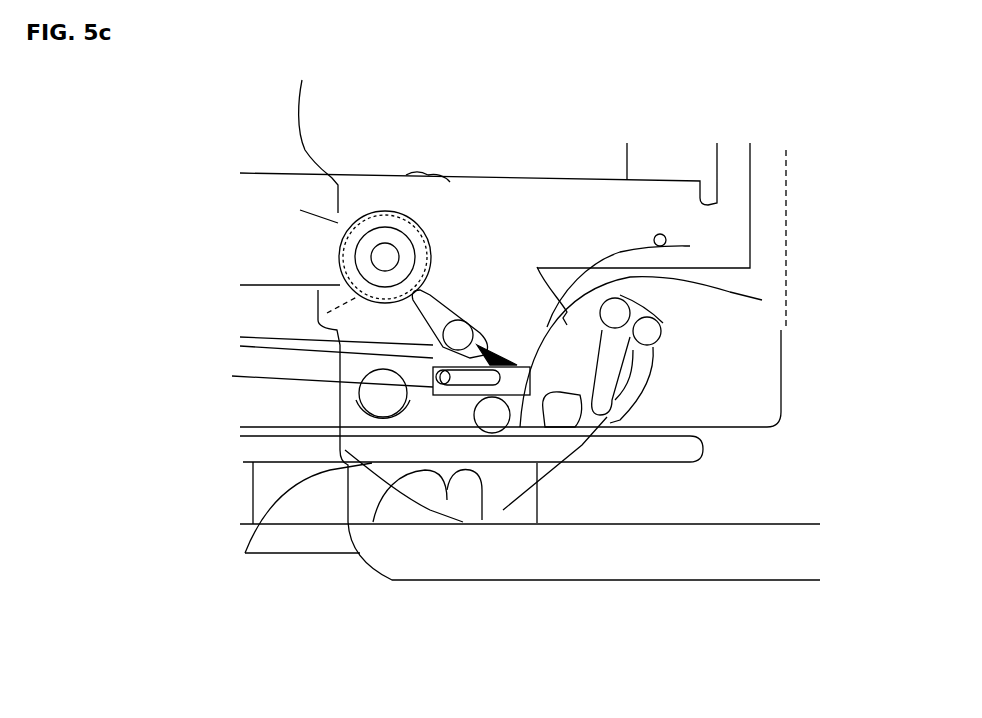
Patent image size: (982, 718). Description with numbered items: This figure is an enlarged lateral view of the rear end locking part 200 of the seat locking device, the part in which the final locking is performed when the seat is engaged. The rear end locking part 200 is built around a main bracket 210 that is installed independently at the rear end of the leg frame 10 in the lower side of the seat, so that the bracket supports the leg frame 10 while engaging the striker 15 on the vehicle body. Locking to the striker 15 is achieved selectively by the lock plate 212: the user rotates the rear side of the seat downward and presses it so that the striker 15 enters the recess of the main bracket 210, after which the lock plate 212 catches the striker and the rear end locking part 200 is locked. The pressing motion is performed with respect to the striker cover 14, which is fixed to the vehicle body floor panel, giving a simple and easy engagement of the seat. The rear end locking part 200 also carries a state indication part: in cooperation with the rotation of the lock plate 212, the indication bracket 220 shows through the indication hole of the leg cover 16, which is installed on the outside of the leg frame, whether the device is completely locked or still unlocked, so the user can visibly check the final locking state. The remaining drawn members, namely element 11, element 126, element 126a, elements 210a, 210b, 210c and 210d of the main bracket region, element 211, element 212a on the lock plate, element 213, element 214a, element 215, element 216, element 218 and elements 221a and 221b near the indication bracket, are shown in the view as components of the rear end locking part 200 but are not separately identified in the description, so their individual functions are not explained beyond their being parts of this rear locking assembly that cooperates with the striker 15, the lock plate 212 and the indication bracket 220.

The leg frame 10 is at (658, 200).
The first housing part 11 is at (288, 542).
The striker cover 14 is at (640, 467).
The striker 15 is at (460, 518).
The leg cover 16 is at (781, 397).
The slider bar 126 is at (340, 377).
The slider bar tab 126a is at (430, 427).
The rear end locking part 200 is at (662, 378).
The main bracket 210 is at (245, 553).
The lever wheel 210a is at (340, 252).
The lever boss 210b is at (433, 293).
The lever arm 210c is at (620, 283).
The lever foot 210d is at (360, 553).
The slide block 211 is at (440, 372).
The lock plate 212 is at (590, 467).
The link pin 212a is at (494, 435).
The link arm 213 is at (588, 465).
The connecting rod pin 214a is at (468, 320).
The spring hook 215 is at (508, 340).
The bracket 216 is at (310, 132).
The stopper 218 is at (437, 266).
The indication bracket 220 is at (665, 372).
The first latch roller 221a is at (628, 310).
The second latch roller 221b is at (661, 325).